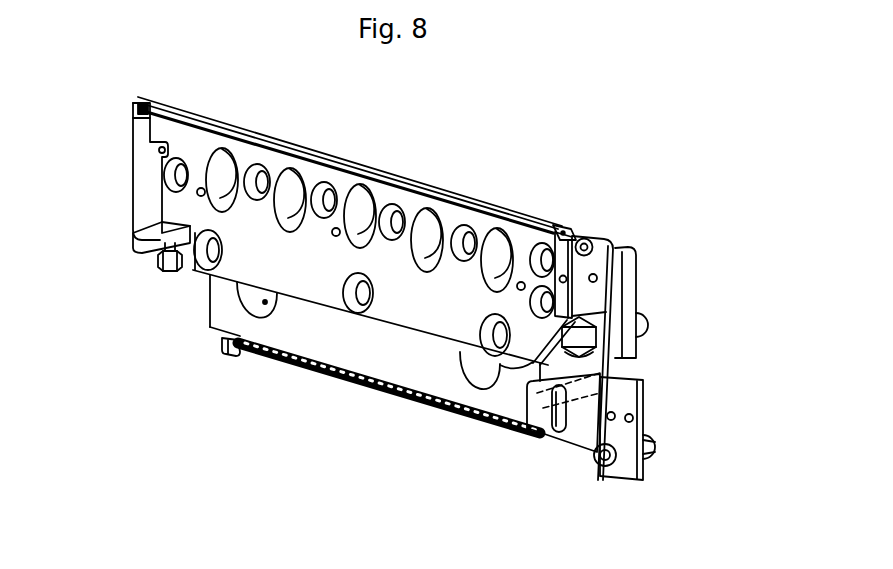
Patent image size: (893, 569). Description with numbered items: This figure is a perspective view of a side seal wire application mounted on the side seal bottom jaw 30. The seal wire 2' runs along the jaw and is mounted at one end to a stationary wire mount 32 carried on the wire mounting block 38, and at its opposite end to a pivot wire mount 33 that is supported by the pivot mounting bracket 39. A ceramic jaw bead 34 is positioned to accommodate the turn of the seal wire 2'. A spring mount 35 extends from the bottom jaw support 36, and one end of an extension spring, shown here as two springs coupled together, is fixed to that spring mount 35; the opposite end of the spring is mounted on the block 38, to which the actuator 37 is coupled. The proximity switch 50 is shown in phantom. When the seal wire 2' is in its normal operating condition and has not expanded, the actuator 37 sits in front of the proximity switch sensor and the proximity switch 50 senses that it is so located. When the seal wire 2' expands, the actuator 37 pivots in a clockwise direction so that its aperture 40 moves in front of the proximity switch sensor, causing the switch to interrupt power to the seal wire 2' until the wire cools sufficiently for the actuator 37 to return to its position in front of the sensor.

The seal wire 2' is at (385, 172).
The stationary wire mount 32 is at (137, 103).
The pivot wire mount 33 is at (598, 262).
The ceramic jaw bead 34 is at (577, 227).
The spring mount 35 is at (229, 354).
The bottom jaw support 36 is at (382, 352).
The actuator 37 is at (580, 437).
The wire mounting block 38 is at (644, 417).
The pivot mounting bracket 39 is at (628, 290).
The aperture 40 is at (560, 425).
The proximity switch 50 is at (583, 380).
The side seal bottom jaw 30 is at (433, 318).